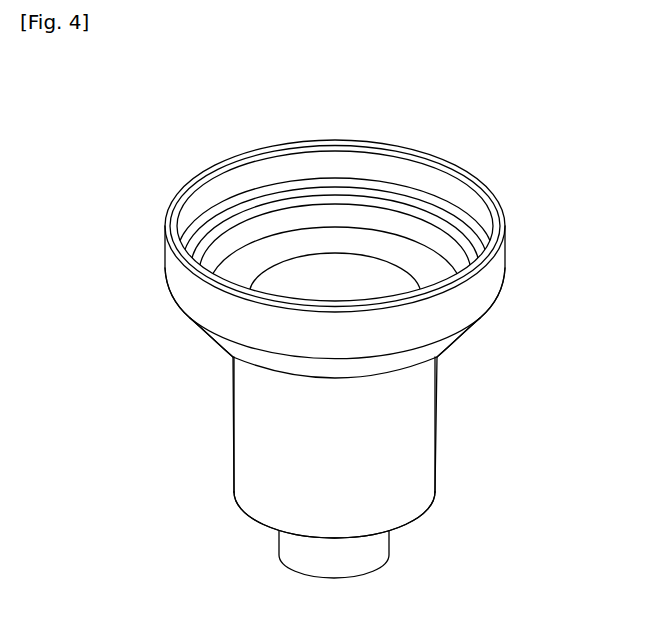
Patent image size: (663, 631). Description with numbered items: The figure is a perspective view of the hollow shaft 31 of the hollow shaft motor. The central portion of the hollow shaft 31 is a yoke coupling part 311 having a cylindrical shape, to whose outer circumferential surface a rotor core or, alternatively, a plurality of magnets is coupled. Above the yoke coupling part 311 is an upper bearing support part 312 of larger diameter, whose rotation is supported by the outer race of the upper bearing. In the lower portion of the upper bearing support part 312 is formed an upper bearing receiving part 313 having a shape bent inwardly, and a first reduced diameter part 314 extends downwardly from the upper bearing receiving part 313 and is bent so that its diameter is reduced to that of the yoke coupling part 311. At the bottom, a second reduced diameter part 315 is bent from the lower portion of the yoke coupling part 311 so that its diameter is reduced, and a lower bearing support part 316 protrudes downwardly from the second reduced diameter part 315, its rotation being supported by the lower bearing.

The hollow shaft 31 is at (151, 155).
The yoke coupling part 311 is at (422, 442).
The upper bearing support part 312 is at (497, 201).
The upper bearing receiving part 313 is at (394, 205).
The first reduced diameter part 314 is at (444, 347).
The second reduced diameter part 315 is at (422, 517).
The lower bearing support part 316 is at (381, 557).